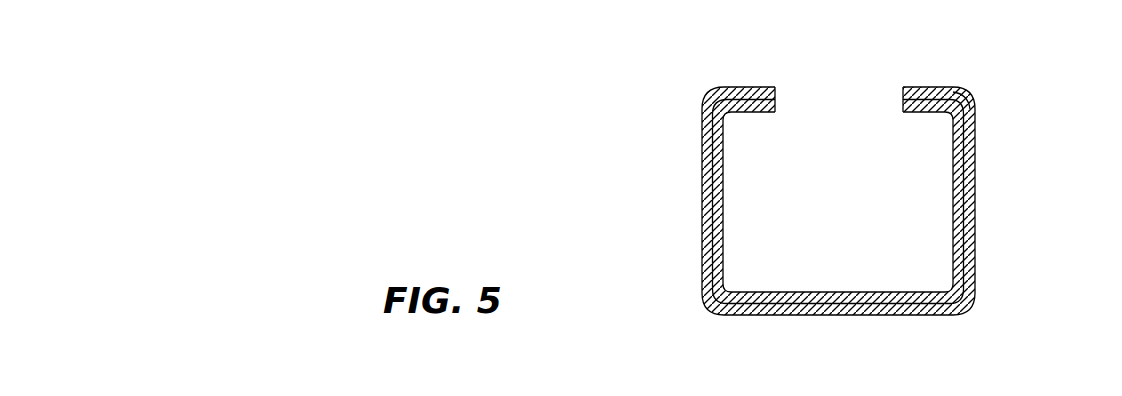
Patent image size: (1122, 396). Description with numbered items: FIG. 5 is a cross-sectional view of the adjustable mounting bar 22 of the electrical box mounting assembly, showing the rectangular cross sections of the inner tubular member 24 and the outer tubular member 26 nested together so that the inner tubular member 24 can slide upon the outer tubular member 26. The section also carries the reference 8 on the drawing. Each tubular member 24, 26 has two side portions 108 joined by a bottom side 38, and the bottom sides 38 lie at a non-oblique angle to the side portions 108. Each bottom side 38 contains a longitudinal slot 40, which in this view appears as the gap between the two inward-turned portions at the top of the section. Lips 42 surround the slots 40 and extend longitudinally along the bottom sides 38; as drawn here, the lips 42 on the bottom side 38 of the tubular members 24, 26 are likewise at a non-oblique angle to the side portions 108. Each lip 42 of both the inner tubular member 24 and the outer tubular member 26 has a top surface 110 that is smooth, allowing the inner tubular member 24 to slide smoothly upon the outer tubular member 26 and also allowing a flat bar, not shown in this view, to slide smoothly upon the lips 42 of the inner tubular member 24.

The adjustable mounting bar 22 is at (869, 182).
The shielding material 8 is at (940, 90).
The inner tubular member 24 is at (911, 300).
The outer tubular member 26 is at (908, 312).
The bottom side 38 is at (916, 88).
The longitudinal slot 40 is at (861, 105).
The lip 42 is at (800, 108).
The side portion 108 is at (703, 152).
The top surface 110 is at (746, 114).